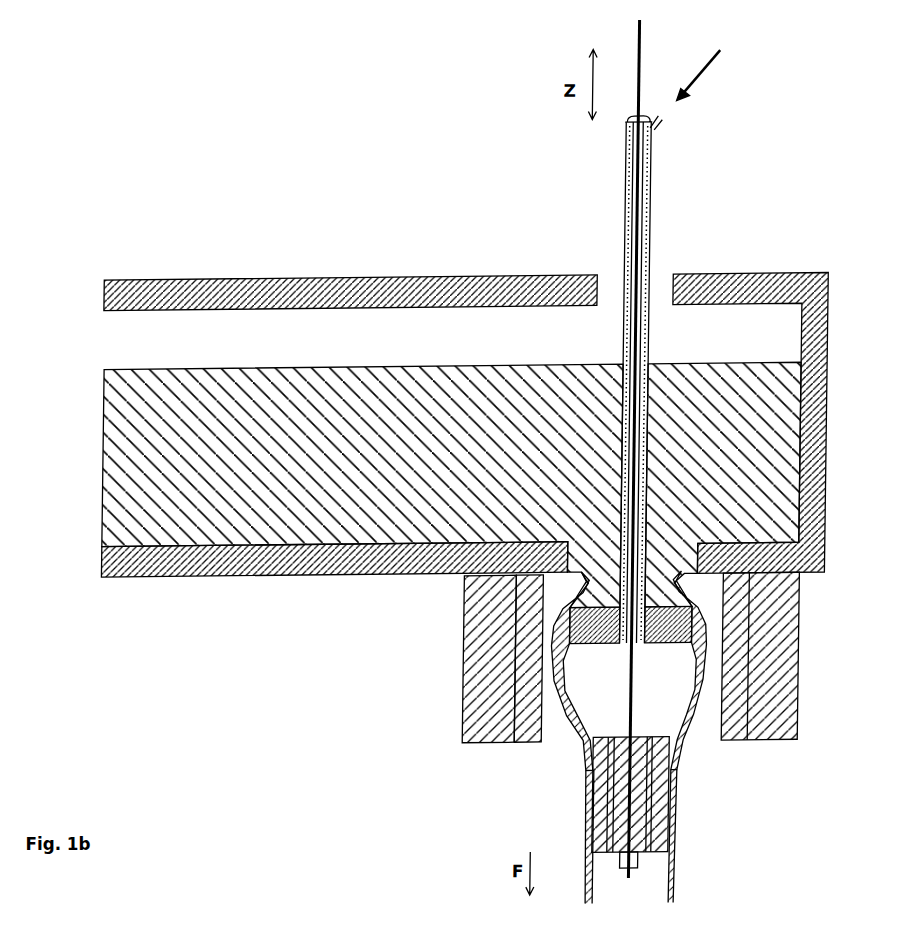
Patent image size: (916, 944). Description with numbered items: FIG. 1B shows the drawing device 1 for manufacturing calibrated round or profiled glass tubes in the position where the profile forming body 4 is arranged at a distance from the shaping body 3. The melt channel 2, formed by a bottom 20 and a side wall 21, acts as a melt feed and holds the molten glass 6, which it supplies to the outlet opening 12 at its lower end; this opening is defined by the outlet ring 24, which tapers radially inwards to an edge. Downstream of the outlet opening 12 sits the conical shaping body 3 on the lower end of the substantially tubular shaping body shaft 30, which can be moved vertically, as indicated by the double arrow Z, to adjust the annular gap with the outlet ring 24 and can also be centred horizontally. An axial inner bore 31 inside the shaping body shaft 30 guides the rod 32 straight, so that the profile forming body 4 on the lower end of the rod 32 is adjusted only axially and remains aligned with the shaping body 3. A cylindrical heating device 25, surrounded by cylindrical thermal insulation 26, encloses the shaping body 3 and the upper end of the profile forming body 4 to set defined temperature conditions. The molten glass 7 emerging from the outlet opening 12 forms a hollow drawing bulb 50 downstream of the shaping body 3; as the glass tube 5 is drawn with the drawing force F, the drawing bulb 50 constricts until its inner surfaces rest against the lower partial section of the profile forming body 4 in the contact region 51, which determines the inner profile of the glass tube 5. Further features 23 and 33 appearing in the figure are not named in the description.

The drawing device 1 is at (828, 184).
The melt channel 2 is at (122, 337).
The shaping body 3 is at (702, 629).
The profile forming body 4 is at (664, 777).
The glass tube 5 is at (680, 867).
The molten glass 6 is at (201, 450).
The molten glass 7 is at (562, 596).
The outlet opening 12 is at (667, 562).
The bottom 20 is at (292, 572).
The side wall 21 is at (818, 327).
The opening 23 is at (655, 283).
The outlet ring 24 is at (701, 579).
The heating device 25 is at (523, 692).
The thermal insulation 26 is at (492, 647).
The shaping body shaft 30 is at (647, 356).
The inner bore 31 is at (647, 168).
The rod 32 is at (634, 50).
The cap 33 is at (656, 121).
The drawing bulb 50 is at (695, 687).
The contact region 51 is at (678, 821).